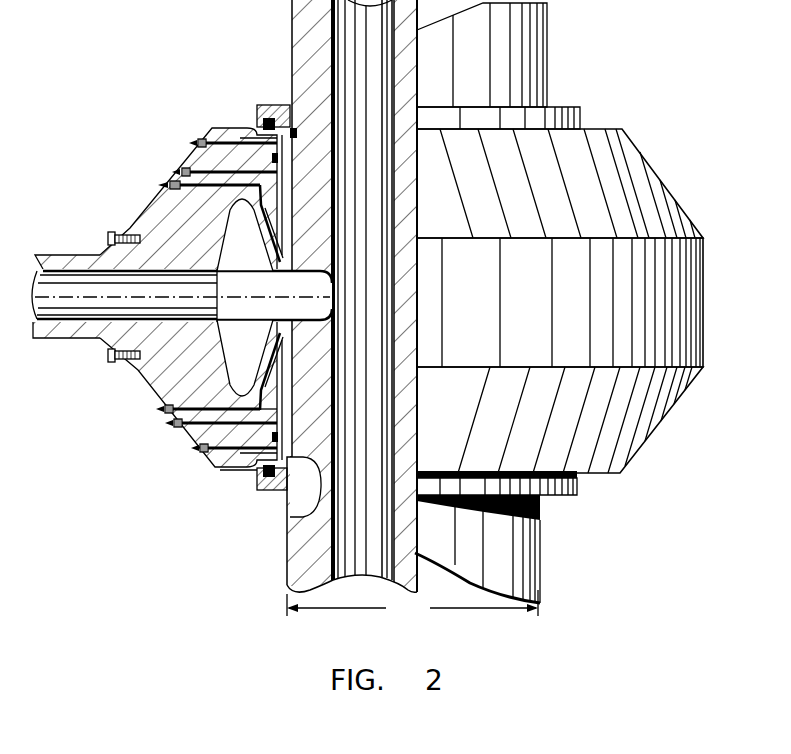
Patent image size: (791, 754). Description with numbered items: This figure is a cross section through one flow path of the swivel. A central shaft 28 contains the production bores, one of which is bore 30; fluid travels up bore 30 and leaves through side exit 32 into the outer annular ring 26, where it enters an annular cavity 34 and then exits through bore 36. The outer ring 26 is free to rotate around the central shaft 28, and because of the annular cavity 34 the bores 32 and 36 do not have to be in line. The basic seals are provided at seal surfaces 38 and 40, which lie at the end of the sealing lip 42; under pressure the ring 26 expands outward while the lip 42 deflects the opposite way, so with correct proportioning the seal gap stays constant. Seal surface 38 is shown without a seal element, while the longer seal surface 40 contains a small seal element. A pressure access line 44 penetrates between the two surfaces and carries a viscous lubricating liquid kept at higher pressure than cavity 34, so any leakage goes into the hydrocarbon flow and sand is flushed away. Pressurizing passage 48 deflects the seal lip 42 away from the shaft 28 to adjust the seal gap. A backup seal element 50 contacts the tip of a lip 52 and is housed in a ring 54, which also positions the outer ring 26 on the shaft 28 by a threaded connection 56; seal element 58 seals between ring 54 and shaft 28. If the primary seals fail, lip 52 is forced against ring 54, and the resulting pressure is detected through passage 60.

The outer annular ring 26 is at (632, 195).
The central shaft 28 is at (412, 606).
The production bore 30 is at (305, 568).
The side exit bore 32 is at (298, 252).
The annular cavity 34 is at (229, 292).
The exit bore 36 is at (62, 286).
The seal surface 38 is at (277, 340).
The seal surface 40 is at (270, 360).
The sealing lip 42 is at (262, 410).
The pressure access line 44 is at (165, 407).
The passage 48 is at (173, 422).
The backup seal element 50 is at (247, 473).
The lip 52 is at (230, 466).
The ring 54 is at (260, 106).
The threaded connection 56 is at (313, 460).
The seal element 58 is at (312, 522).
The passage 60 is at (200, 446).